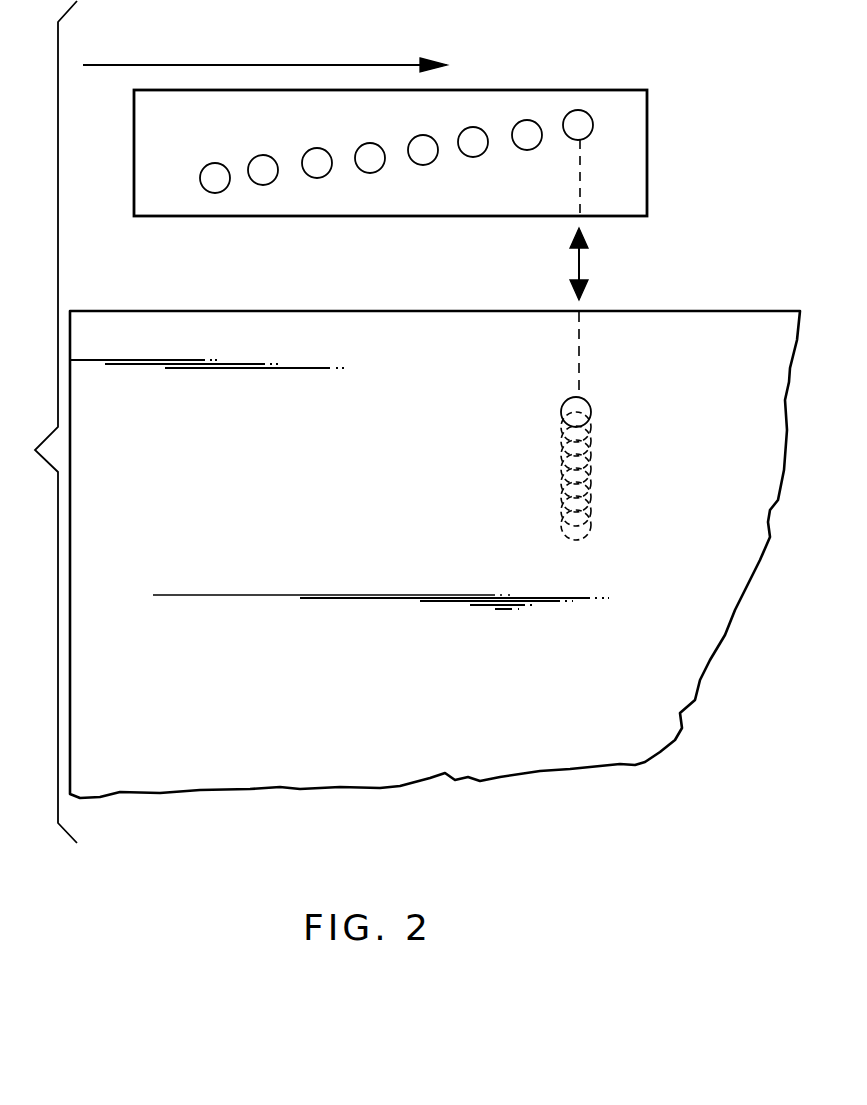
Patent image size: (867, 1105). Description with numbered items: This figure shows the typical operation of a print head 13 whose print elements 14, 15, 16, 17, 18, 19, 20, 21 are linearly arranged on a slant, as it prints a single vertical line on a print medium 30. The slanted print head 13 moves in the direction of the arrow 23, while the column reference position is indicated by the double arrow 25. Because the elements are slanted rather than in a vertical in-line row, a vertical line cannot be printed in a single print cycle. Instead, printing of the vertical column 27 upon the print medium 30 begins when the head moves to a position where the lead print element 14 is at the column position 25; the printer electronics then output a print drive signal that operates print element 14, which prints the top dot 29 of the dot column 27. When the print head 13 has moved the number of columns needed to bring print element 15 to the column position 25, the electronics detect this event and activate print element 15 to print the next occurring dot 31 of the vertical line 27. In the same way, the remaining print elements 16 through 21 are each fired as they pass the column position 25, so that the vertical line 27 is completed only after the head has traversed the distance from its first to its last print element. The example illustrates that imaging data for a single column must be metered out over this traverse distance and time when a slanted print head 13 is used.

The print head 13 is at (647, 152).
The print element 14 is at (586, 140).
The print element 15 is at (523, 150).
The print element 16 is at (469, 157).
The print element 17 is at (418, 165).
The print element 18 is at (365, 173).
The print element 19 is at (312, 178).
The print element 20 is at (256, 184).
The print element 21 is at (200, 181).
The arrow 23 is at (368, 63).
The double arrow 25 is at (581, 270).
The vertical column 27 is at (598, 423).
The top dot 29 is at (560, 410).
The print medium 30 is at (631, 320).
The next occurring dot 31 is at (560, 432).